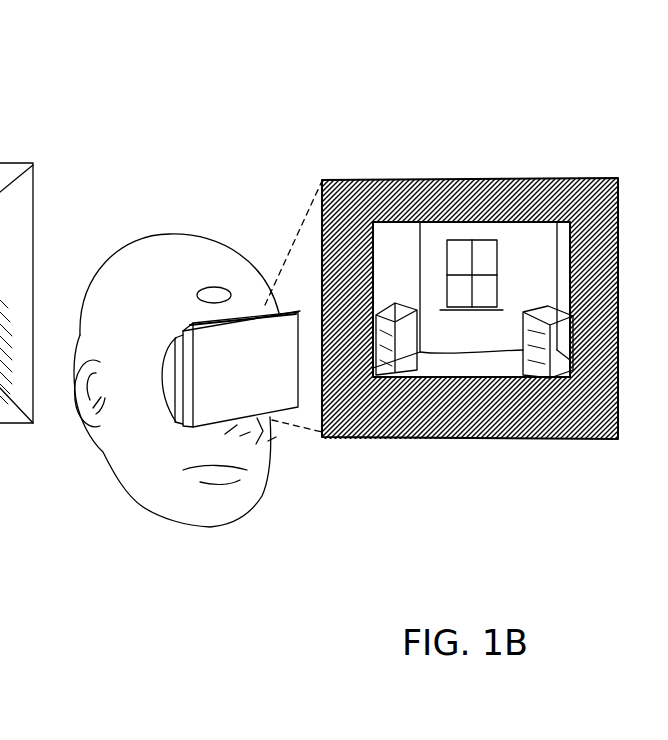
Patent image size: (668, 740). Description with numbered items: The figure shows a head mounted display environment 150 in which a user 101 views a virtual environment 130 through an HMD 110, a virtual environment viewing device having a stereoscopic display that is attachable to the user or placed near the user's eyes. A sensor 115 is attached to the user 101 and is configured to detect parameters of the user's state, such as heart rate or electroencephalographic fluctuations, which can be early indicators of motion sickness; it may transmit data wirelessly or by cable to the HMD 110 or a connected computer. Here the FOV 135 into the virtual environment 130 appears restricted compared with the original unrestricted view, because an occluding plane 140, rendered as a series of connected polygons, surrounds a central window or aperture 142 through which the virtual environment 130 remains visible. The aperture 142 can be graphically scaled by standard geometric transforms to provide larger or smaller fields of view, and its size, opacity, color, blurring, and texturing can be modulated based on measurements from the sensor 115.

The user 101 is at (170, 198).
The HMD 110 is at (152, 450).
The sensor 115 is at (212, 268).
The virtual environment 130 is at (466, 152).
The FOV 135 is at (465, 372).
The occluding plane 140 is at (512, 454).
The aperture 142 is at (518, 400).
The head mounted display environment 150 is at (553, 79).